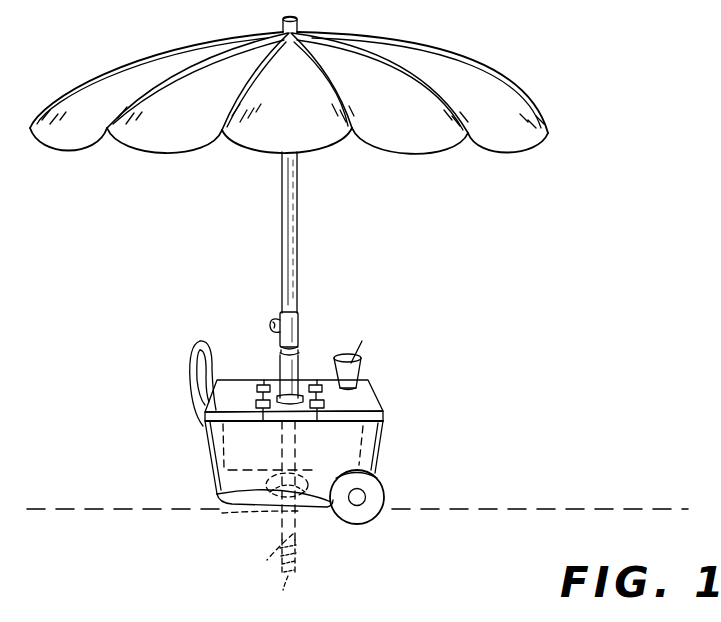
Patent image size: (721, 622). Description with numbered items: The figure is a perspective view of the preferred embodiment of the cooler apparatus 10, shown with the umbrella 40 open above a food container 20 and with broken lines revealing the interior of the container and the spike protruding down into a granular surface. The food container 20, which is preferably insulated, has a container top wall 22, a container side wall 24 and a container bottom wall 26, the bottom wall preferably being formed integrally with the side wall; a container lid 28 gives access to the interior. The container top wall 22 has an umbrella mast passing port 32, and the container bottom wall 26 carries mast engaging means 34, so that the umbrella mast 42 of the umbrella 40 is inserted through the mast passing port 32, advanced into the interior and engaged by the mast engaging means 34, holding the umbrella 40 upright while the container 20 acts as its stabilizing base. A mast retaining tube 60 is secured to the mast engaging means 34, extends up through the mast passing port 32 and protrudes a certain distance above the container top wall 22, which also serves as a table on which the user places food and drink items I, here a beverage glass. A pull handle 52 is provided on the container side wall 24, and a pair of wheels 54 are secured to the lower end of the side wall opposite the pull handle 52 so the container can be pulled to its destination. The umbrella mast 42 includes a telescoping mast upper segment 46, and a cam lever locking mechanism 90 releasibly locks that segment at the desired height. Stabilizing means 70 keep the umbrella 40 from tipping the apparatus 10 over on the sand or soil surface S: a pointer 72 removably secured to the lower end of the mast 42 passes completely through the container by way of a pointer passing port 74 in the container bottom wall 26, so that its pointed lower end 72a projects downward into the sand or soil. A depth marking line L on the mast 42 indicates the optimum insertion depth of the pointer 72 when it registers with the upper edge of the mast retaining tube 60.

The cooler apparatus 10 is at (608, 152).
The food container 20 is at (382, 443).
The container top wall 22 is at (234, 386).
The container side wall 24 is at (209, 458).
The container bottom wall 26 is at (241, 508).
The container lid 28 is at (367, 402).
The umbrella mast passing port 32 is at (336, 362).
The mast engaging means 34 is at (300, 490).
The umbrella 40 is at (478, 92).
The umbrella mast 42 is at (299, 221).
The mast upper segment 46 is at (299, 189).
The pull handle 52 is at (189, 372).
The wheels 54 is at (375, 493).
The mast retaining tube 60 is at (308, 340).
The stabilizing means 70 is at (320, 562).
The pointer 72 is at (252, 573).
The pointed lower end 72a is at (281, 585).
The pointer passing port 74 is at (222, 513).
The cam lever locking mechanism 90 is at (274, 322).
The depth marking line L is at (272, 334).
The food and drink items I is at (360, 374).
The sand or soil surface S is at (47, 508).